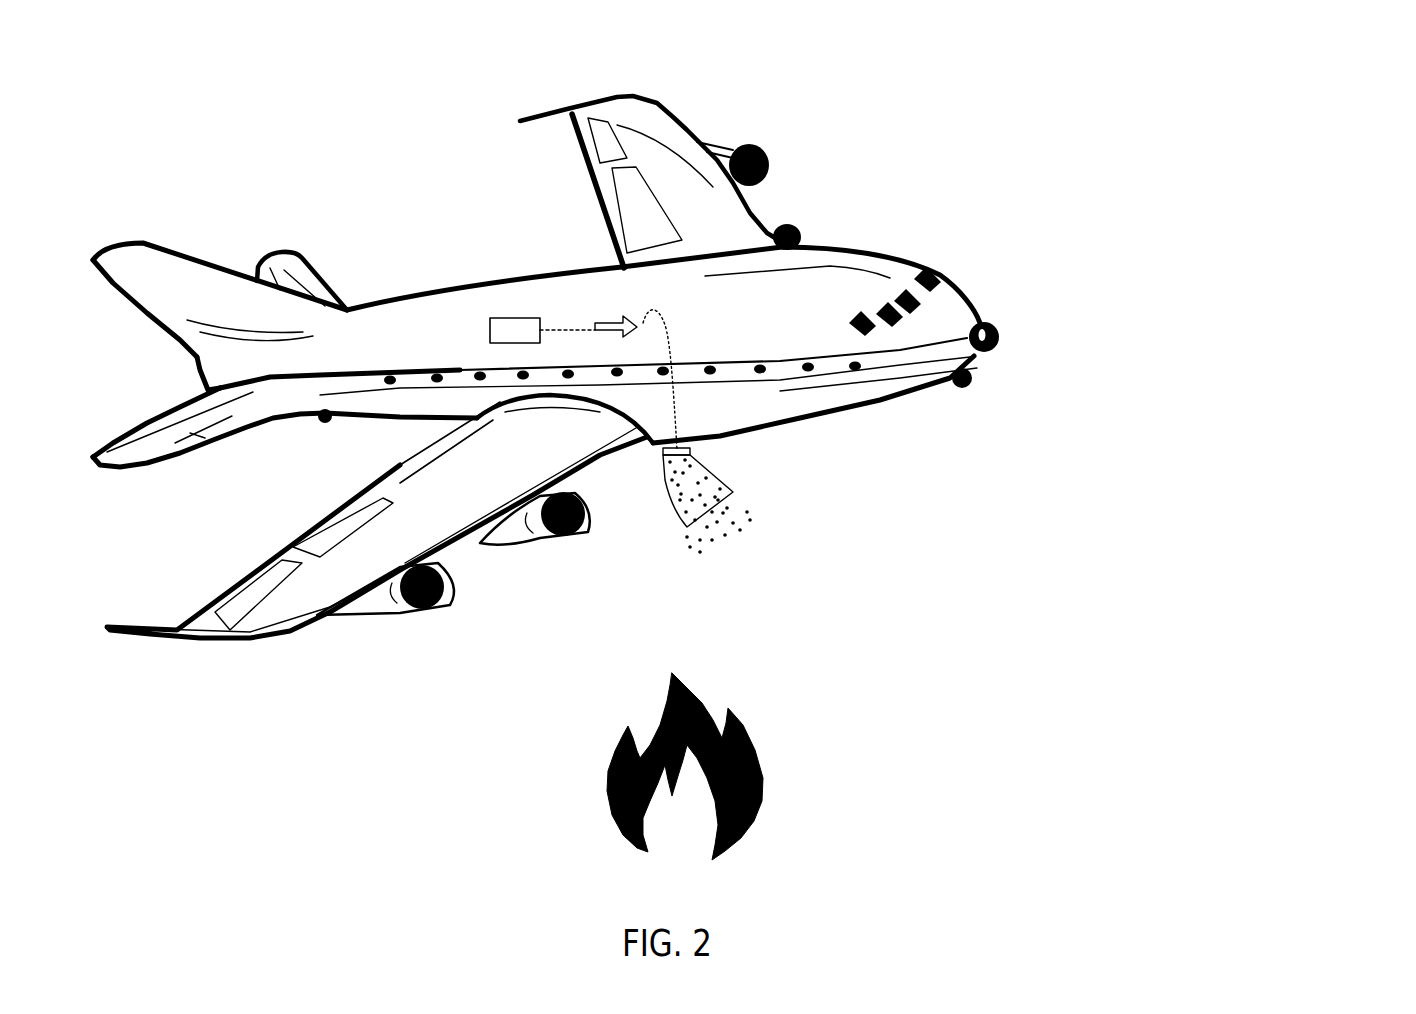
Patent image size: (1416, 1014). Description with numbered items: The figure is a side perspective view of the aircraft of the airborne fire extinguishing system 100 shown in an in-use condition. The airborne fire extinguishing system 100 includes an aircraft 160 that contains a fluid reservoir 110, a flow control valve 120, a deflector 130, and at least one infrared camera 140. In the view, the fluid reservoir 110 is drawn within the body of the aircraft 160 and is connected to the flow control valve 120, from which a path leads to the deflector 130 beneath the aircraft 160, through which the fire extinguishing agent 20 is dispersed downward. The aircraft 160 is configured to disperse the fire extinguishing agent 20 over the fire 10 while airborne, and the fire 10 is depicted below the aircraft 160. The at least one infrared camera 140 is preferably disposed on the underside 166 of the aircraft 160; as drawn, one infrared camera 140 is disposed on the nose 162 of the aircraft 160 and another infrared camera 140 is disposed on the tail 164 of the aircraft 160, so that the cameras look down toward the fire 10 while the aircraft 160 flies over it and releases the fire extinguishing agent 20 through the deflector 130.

The airborne fire extinguishing system 100 is at (1240, 77).
The fluid reservoir 110 is at (506, 314).
The flow control valve 120 is at (612, 316).
The deflector 130 is at (731, 481).
The fire extinguishing agent 20 is at (745, 542).
The infrared camera 140 is at (318, 422).
The aircraft 160 is at (955, 278).
The nose 162 is at (995, 312).
The tail 164 is at (170, 345).
The underside 166 is at (408, 425).
The fire 10 is at (772, 789).